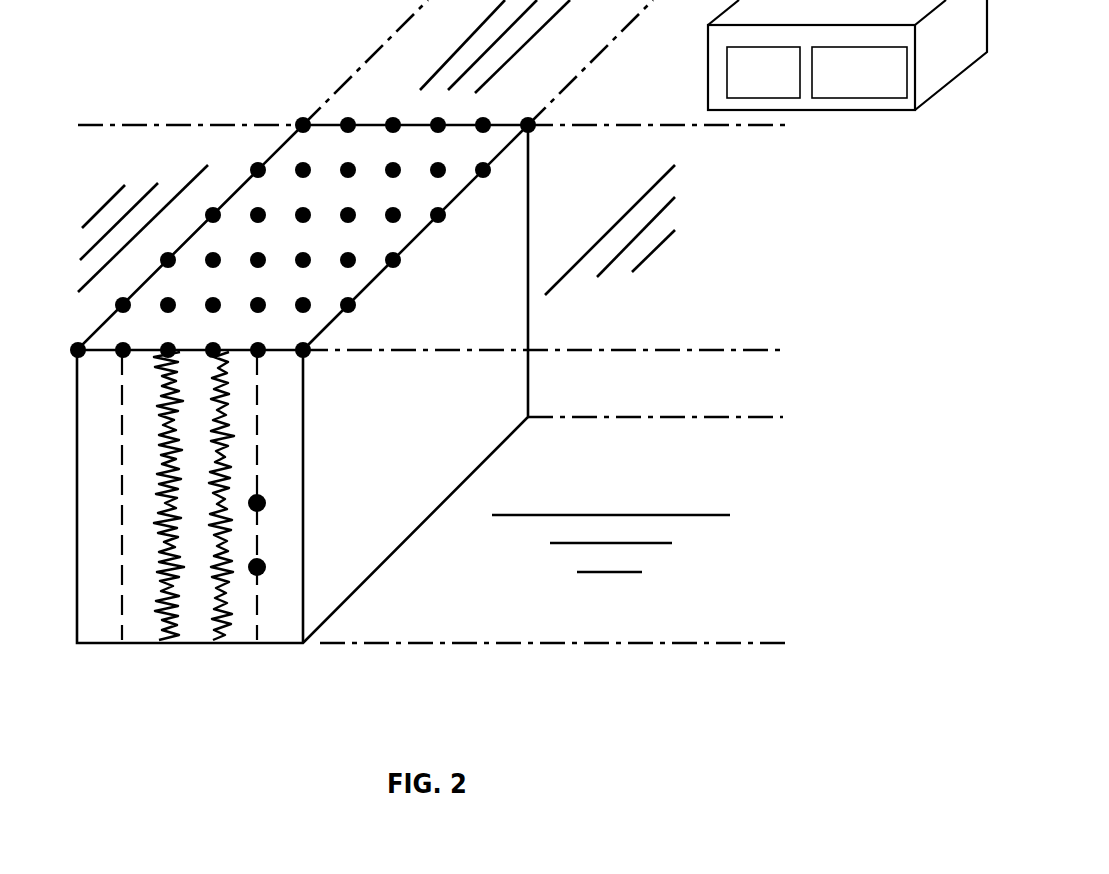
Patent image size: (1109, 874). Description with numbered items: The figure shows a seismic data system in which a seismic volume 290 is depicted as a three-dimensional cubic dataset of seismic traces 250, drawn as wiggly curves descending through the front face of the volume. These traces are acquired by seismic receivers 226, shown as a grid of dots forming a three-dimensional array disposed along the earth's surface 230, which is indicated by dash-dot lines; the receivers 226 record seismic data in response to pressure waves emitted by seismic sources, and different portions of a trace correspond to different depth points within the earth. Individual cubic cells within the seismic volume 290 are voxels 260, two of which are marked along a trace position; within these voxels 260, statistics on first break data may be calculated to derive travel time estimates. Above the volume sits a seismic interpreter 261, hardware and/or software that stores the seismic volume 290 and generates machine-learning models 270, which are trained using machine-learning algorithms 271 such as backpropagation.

The seismic receivers 226 is at (303, 184).
The earth's surface 230 is at (738, 322).
The seismic volume 290 is at (412, 470).
The voxels 260 is at (375, 558).
The seismic traces 250 is at (200, 564).
The seismic interpreter 261 is at (873, 39).
The machine-learning models 270 is at (793, 94).
The machine-learning algorithms 271 is at (903, 94).